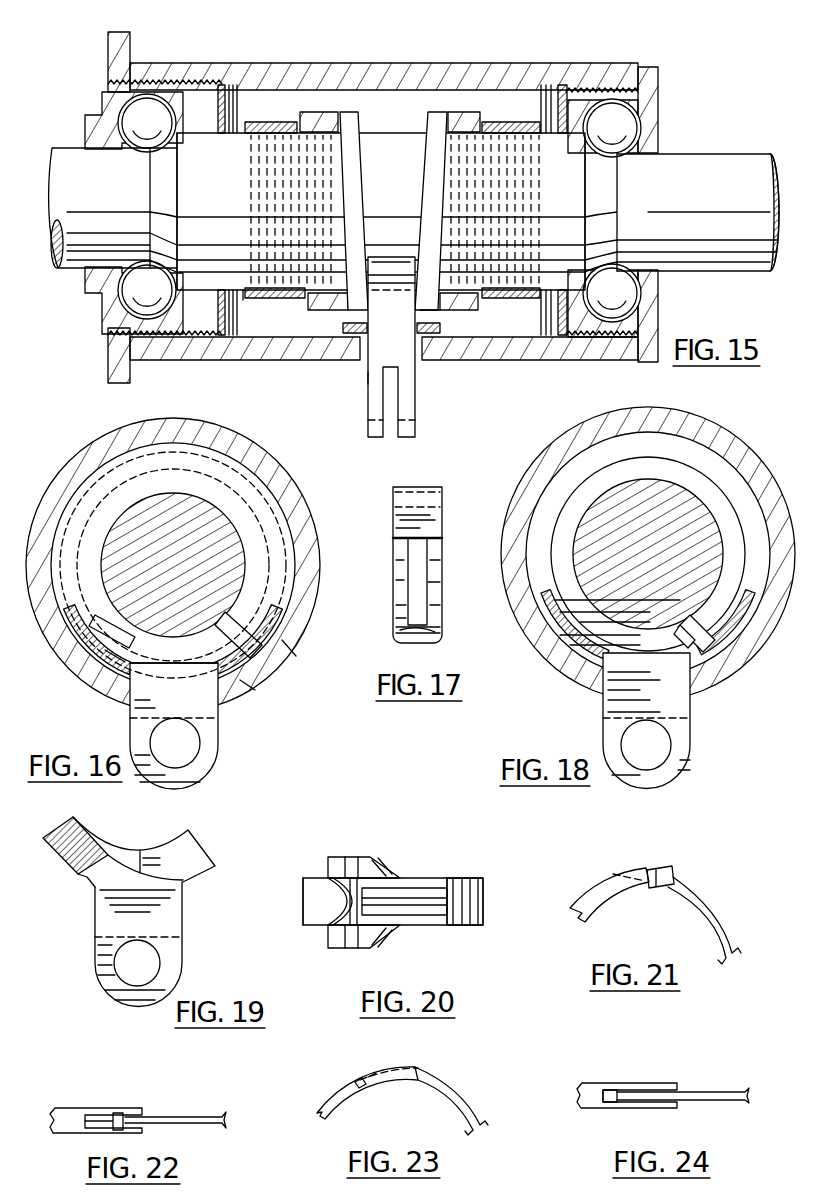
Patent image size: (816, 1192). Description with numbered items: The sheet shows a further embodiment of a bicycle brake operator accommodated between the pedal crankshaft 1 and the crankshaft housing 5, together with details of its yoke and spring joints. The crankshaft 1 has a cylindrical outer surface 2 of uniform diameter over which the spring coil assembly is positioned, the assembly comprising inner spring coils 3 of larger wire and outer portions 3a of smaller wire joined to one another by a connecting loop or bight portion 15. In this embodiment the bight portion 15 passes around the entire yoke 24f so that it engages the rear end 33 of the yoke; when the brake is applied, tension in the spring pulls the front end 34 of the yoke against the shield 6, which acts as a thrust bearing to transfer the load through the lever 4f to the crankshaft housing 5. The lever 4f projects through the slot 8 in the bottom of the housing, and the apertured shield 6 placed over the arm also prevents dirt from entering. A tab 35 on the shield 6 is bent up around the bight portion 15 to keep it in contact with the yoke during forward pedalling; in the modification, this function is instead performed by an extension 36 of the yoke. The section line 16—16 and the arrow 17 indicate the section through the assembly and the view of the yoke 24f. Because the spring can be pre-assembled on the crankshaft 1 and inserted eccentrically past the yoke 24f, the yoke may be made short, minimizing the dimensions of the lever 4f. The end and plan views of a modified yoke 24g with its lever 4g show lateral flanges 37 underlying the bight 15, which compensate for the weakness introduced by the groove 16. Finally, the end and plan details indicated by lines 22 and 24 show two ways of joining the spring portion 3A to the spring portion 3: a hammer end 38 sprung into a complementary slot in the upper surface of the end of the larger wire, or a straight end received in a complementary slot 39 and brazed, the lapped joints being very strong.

In FIG. 15, the pedal crankshaft 1 is at (705, 154).
In FIG. 16, the pedal crankshaft 1 is at (135, 545).
In FIG. 18, the pedal crankshaft 1 is at (648, 554).
In FIG. 15, the cylindrical outer surface 2 is at (393, 136).
In FIG. 15, the spring coils 3 is at (300, 305).
In FIG. 21, the spring coils 3 is at (587, 890).
In FIG. 22, the spring coils 3 is at (87, 1108).
In FIG. 23, the spring coils 3 is at (325, 1103).
In FIG. 24, the spring coils 3 is at (625, 1083).
In FIG. 15, the outer portions of the coils 3a is at (270, 300).
In FIG. 21, the outer spring portion 3A is at (722, 912).
In FIG. 22, the outer spring portion 3A is at (175, 1117).
In FIG. 23, the outer spring portion 3A is at (447, 1090).
In FIG. 24, the outer spring portion 3A is at (720, 1092).
In FIG. 15, the lever 4f is at (418, 393).
In FIG. 16, the lever 4f is at (220, 757).
In FIG. 17, the lever 4f is at (444, 572).
In FIG. 19, the lever 4g is at (183, 940).
In FIG. 20, the lever 4g is at (418, 878).
In FIG. 15, the crankshaft housing 5 is at (560, 63).
In FIG. 16, the crankshaft housing 5 is at (85, 442).
In FIG. 18, the crankshaft housing 5 is at (648, 554).
In FIG. 15, the shield 6 is at (440, 322).
In FIG. 16, the shield 6 is at (100, 662).
In FIG. 18, the shield 6 is at (725, 660).
In FIG. 19, the shield 6 is at (137, 1010).
In FIG. 15, the slot 8 is at (360, 380).
In FIG. 16, the slot 8 is at (120, 690).
In FIG. 16, the bight portion 15 is at (278, 670).
In FIG. 18, the bight portion 15 is at (706, 655).
In FIG. 15, the groove 16 is at (400, 20).
In FIG. 19, the groove 16 is at (82, 868).
In FIG. 20, the groove 16 is at (342, 948).
In FIG. 17, the arrow 17 is at (376, 478).
In FIG. 21, the section line 22 is at (652, 810).
In FIG. 23, the section line 24 is at (395, 1018).
In FIG. 15, the yoke 24f is at (402, 297).
In FIG. 16, the yoke 24f is at (218, 712).
In FIG. 17, the yoke 24f is at (444, 534).
In FIG. 19, the yoke 24g is at (200, 860).
In FIG. 20, the yoke 24g is at (460, 925).
In FIG. 16, the rear end of the yoke 33 is at (250, 690).
In FIG. 17, the rear end of the yoke 33 is at (425, 636).
In FIG. 18, the rear end of the yoke 33 is at (690, 660).
In FIG. 15, the front end of the yoke 34 is at (393, 272).
In FIG. 16, the front end of the yoke 34 is at (90, 632).
In FIG. 17, the front end of the yoke 34 is at (420, 512).
In FIG. 16, the tab 35 is at (296, 656).
In FIG. 18, the extension of the yoke 36 is at (740, 668).
In FIG. 20, the lateral flanges 37 is at (352, 857).
In FIG. 21, the hammer end 38 is at (662, 866).
In FIG. 24, the complementary slot 39 is at (610, 1102).